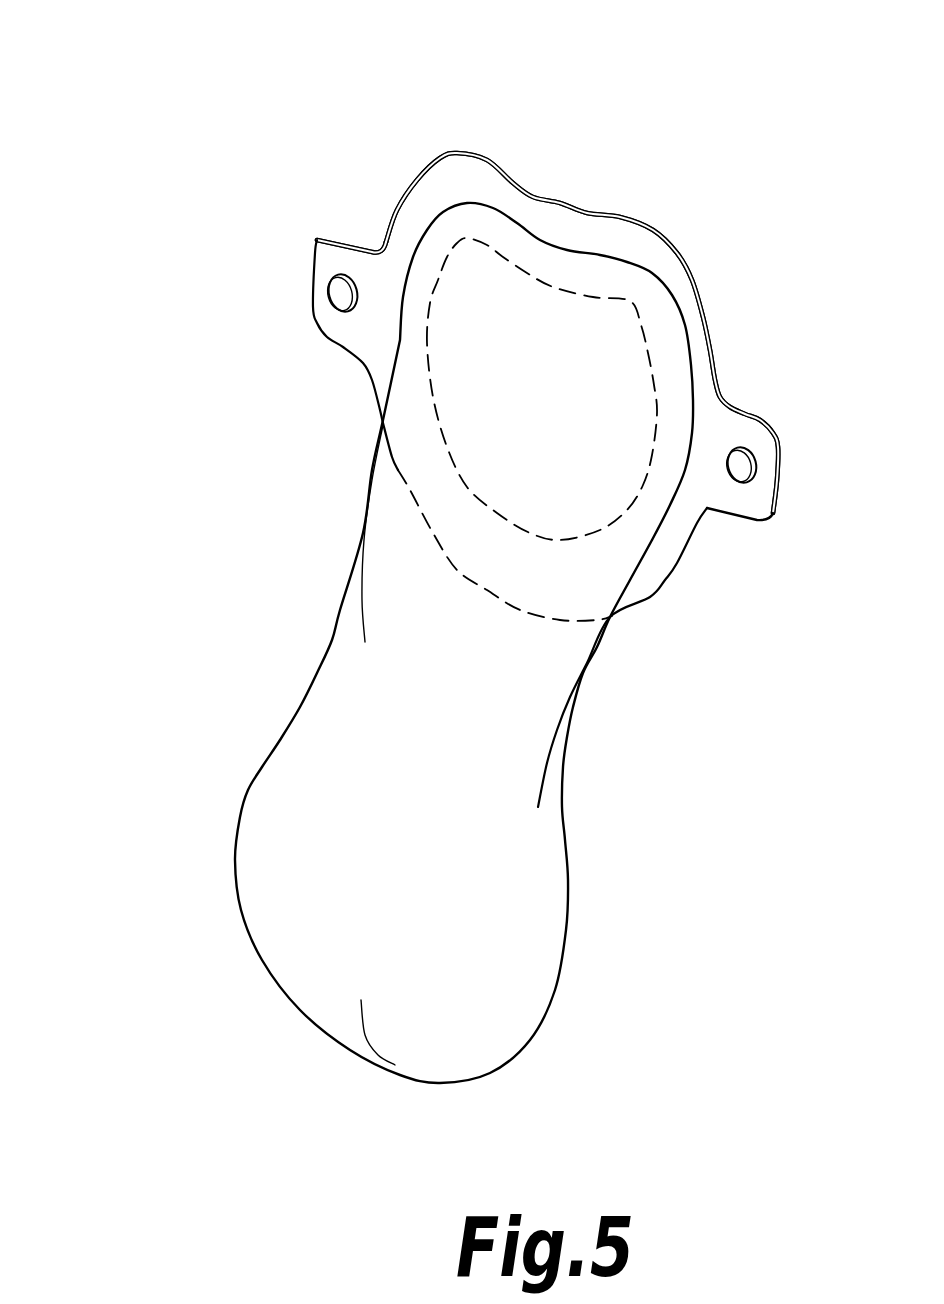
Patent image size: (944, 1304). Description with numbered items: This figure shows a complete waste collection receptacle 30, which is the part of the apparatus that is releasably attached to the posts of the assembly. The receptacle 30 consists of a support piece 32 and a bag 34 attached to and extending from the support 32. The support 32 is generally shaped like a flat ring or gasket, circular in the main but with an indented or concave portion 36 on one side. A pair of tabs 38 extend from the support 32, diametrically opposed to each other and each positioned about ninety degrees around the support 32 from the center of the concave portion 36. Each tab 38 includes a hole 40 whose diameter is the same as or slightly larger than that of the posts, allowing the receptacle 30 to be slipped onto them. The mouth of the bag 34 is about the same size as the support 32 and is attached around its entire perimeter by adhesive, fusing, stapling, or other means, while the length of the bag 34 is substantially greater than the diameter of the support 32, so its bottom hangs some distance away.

The waste collection receptacle 30 is at (163, 128).
The support piece 32 is at (457, 180).
The bag 34 is at (753, 413).
The concave portion 36 is at (563, 207).
The tabs 38 is at (333, 327).
The hole 40 is at (340, 292).